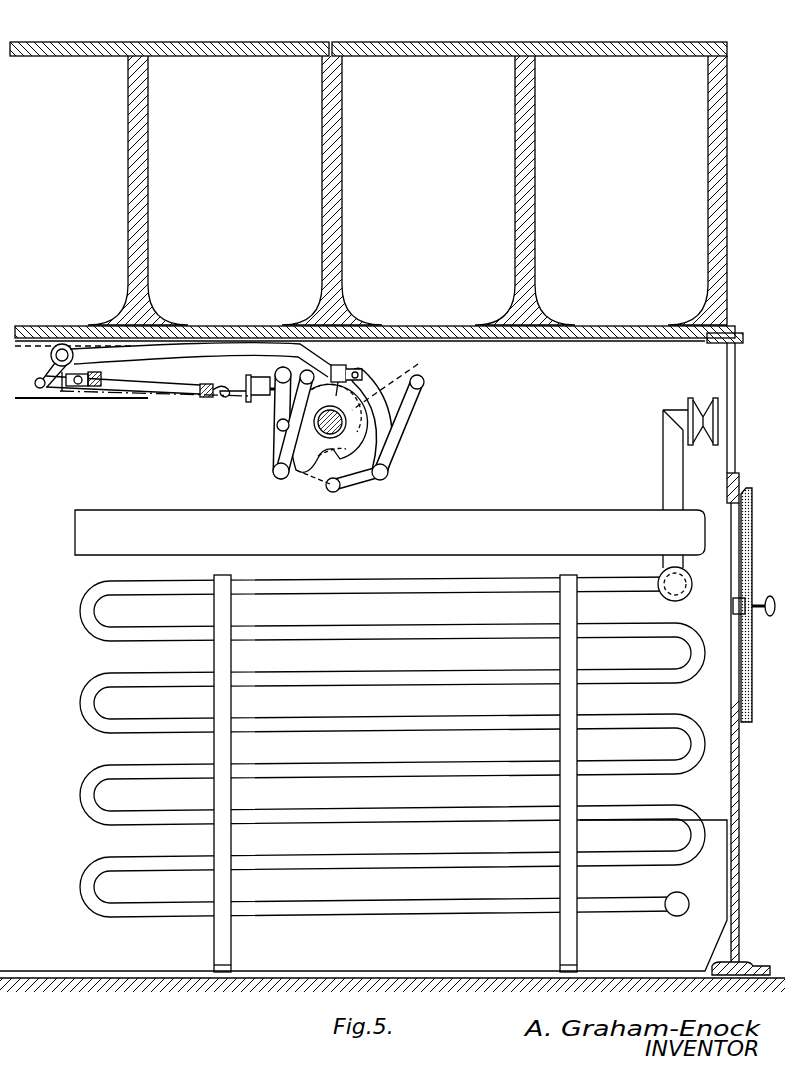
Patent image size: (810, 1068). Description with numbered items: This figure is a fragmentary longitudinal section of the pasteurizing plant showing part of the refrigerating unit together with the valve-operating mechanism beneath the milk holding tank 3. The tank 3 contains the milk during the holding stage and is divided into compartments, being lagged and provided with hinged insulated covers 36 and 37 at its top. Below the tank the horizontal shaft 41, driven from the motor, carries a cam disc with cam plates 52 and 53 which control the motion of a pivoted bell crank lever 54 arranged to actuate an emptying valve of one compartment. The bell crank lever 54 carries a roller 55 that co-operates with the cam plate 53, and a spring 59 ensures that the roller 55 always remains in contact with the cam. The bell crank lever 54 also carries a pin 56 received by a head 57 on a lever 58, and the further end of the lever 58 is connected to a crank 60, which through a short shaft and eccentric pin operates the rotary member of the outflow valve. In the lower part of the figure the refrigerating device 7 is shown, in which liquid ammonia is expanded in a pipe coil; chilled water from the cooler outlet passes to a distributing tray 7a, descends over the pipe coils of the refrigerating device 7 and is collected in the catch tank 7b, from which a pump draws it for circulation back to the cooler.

The hinged insulated cover 36 is at (50, 50).
The hinged insulated cover 37 is at (512, 45).
The milk holding tank 3 is at (720, 163).
The crank 60 is at (58, 345).
The lever 58 is at (213, 350).
The head 57 is at (343, 365).
The pin 56 is at (364, 372).
The cam plate 52 is at (397, 377).
The spring 59 is at (175, 396).
The horizontal shaft 41 is at (318, 426).
The bell crank lever 54 is at (386, 446).
The cam plate 53 is at (313, 465).
The roller 55 is at (338, 483).
The distributing tray 7a is at (88, 541).
The refrigerating device 7 is at (446, 676).
The catch tank 7b is at (145, 955).